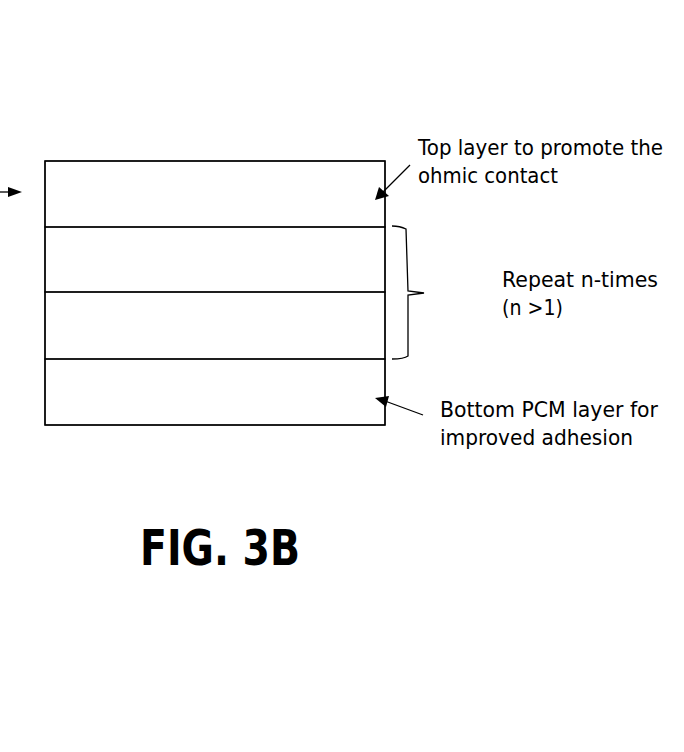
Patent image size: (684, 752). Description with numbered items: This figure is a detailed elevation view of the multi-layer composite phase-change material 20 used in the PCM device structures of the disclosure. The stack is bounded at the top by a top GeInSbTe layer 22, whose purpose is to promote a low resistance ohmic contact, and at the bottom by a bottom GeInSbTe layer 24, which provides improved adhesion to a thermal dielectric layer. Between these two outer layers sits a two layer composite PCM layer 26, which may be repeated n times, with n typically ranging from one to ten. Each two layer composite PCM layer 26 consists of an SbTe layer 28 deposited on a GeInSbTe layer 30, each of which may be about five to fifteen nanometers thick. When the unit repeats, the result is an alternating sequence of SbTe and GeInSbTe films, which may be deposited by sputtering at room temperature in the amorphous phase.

The multi-layer composite phase-change material 20 is at (231, 124).
The top GeInSbTe layer 22 is at (298, 188).
The bottom GeInSbTe layer 24 is at (138, 392).
The two layer composite PCM layer 26 is at (428, 293).
The SbTe layer 28 is at (72, 243).
The GeInSbTe layer 30 is at (95, 342).